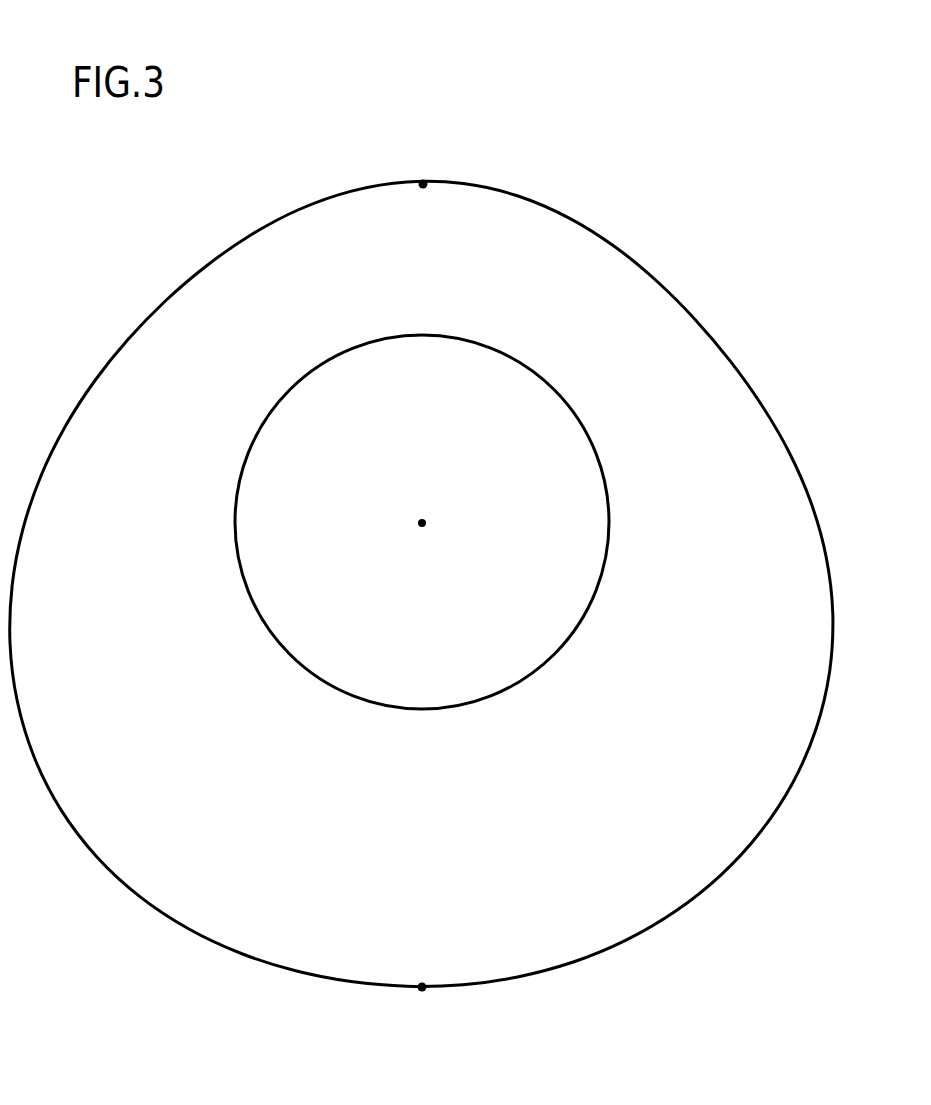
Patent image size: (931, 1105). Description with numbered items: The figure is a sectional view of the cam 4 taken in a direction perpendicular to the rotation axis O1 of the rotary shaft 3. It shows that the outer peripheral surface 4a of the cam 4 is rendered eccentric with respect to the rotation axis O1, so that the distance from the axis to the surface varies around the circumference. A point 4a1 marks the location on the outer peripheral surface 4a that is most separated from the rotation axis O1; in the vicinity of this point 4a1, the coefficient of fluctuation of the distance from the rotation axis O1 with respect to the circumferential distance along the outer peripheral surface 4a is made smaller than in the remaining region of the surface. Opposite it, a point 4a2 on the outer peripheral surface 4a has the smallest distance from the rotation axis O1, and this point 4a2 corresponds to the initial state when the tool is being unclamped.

The rotary shaft 3 is at (527, 368).
The cam 4 is at (421, 560).
The outer peripheral surface 4a is at (510, 192).
The point 4a1 is at (424, 990).
The point 4a2 is at (423, 184).
The rotation axis O1 is at (424, 527).